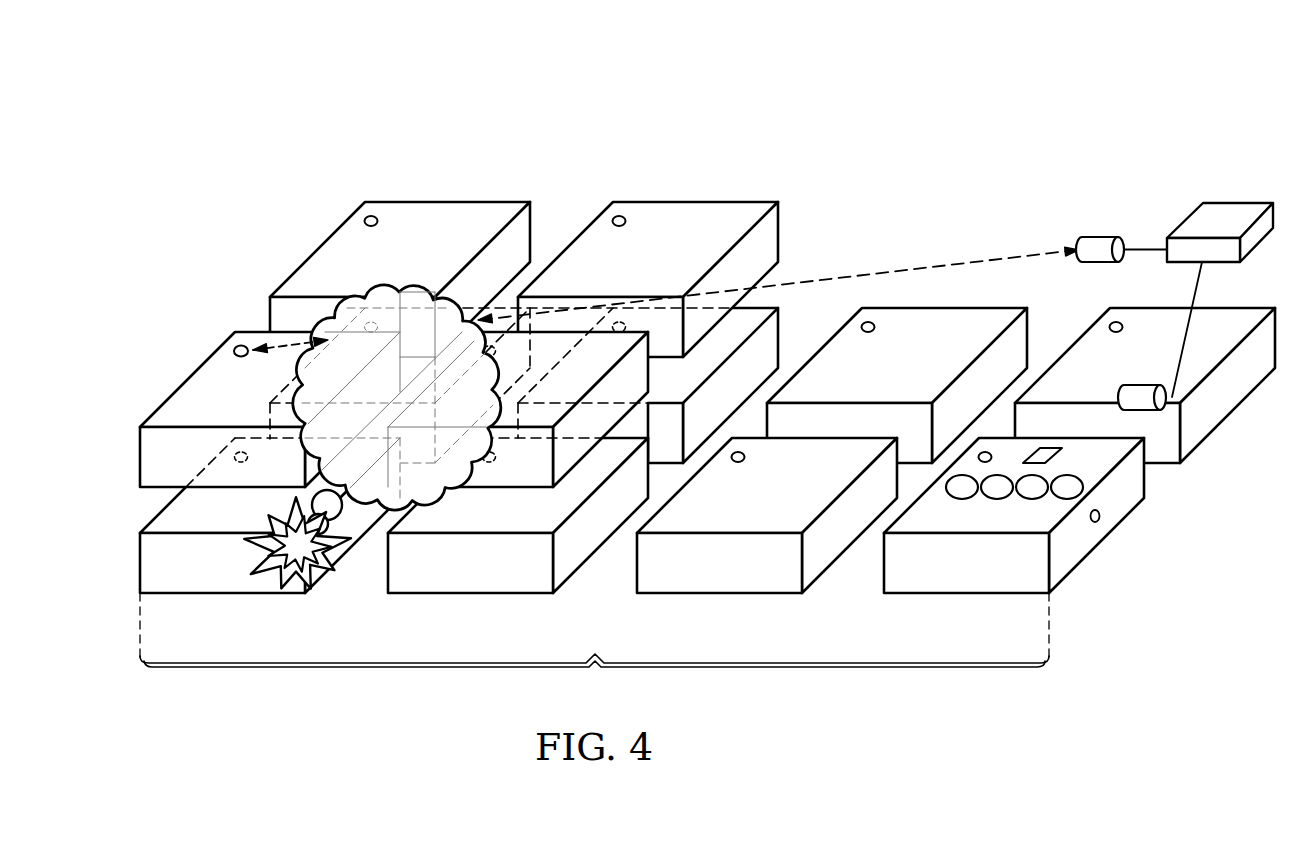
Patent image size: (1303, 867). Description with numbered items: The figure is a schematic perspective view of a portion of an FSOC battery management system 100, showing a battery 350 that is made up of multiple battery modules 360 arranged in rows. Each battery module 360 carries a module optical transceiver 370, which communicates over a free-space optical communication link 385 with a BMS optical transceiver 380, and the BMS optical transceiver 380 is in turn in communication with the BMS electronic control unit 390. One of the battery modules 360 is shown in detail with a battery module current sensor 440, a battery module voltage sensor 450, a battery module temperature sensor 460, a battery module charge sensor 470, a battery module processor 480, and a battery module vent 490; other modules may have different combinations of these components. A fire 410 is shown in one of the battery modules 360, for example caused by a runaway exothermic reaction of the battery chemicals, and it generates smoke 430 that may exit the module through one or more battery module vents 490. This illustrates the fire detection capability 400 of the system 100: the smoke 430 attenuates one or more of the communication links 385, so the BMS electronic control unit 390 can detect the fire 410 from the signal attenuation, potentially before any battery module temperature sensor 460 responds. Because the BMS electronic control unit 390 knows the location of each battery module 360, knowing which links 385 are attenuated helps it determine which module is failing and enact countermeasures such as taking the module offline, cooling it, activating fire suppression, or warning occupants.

The FSOC battery management system 100 is at (236, 115).
The fire detection capability 400 is at (450, 132).
The smoke 430 is at (416, 290).
The module optical transceiver 370 is at (236, 346).
The communication link 385 is at (906, 268).
The BMS optical transceiver 380 is at (1099, 238).
The BMS electronic control unit 390 is at (1237, 204).
The battery module processor 480 is at (1052, 447).
The battery module 360 is at (140, 458).
The fire 410 is at (275, 588).
The battery module vent 490 is at (1102, 517).
The battery module charge sensor 470 is at (1067, 499).
The battery module current sensor 440 is at (955, 499).
The battery module voltage sensor 450 is at (998, 499).
The battery module temperature sensor 460 is at (1033, 499).
The battery 350 is at (594, 651).